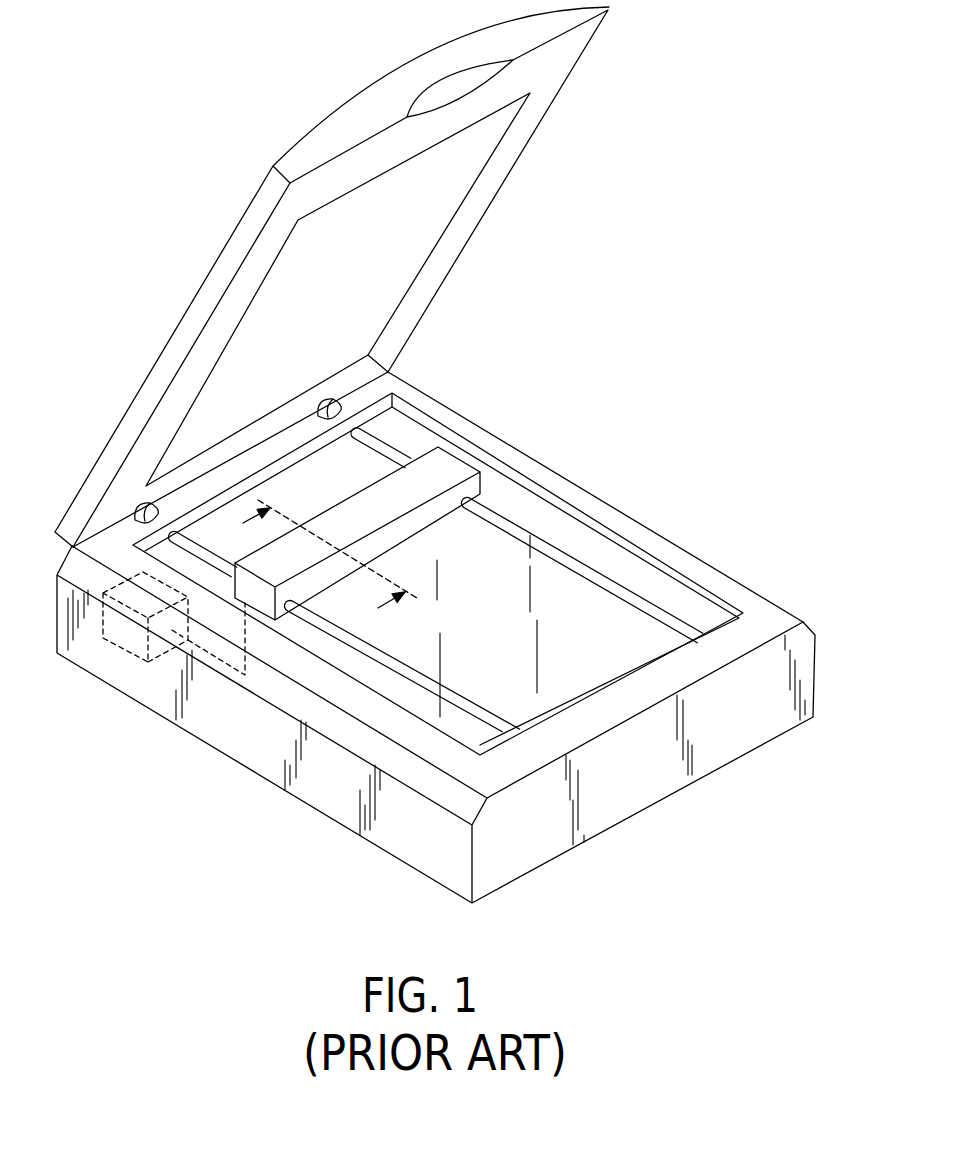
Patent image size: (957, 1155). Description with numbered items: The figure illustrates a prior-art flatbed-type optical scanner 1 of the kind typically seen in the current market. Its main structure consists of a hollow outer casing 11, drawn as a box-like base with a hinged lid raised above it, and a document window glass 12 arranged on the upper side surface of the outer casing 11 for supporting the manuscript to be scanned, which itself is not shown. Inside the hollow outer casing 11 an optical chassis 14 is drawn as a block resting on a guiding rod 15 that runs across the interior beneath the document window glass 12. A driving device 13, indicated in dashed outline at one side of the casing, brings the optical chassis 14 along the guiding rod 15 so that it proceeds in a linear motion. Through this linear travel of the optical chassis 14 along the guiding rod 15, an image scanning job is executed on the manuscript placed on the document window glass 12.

The optical scanner 1 is at (333, 825).
The outer casing 11 is at (717, 575).
The document window glass 12 is at (553, 518).
The driving device 13 is at (127, 638).
The optical chassis 14 is at (437, 463).
The guiding rod 15 is at (585, 573).